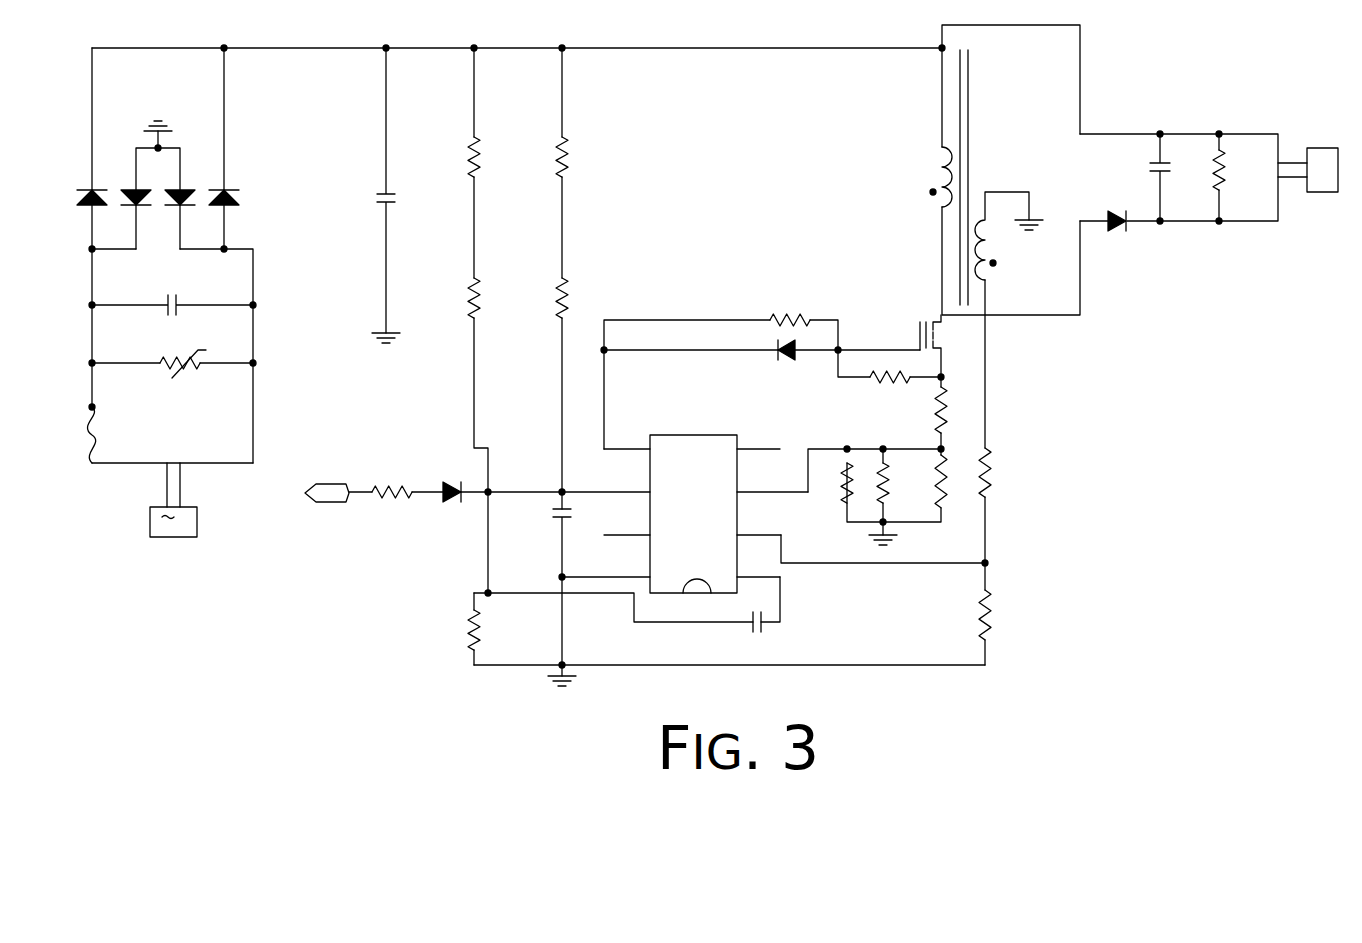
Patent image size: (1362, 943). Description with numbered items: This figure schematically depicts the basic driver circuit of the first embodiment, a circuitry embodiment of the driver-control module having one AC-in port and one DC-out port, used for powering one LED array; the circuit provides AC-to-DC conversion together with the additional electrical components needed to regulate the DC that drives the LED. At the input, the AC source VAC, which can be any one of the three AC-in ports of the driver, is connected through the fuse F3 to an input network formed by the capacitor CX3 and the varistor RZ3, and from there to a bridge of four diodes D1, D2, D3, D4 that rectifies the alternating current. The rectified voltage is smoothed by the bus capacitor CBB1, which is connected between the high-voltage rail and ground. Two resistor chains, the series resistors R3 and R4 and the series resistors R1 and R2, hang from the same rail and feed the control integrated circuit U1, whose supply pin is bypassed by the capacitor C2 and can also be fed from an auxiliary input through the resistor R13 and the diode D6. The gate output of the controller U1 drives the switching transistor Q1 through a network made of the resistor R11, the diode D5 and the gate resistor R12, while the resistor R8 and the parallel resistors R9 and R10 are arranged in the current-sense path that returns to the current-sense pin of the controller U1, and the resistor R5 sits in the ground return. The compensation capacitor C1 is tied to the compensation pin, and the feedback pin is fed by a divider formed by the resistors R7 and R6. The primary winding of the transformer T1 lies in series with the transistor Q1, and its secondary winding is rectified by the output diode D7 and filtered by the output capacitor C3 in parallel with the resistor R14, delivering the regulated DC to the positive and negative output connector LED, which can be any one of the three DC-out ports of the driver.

The rectifier diode D1 is at (95, 227).
The rectifier diode D2 is at (139, 187).
The rectifier diode D3 is at (183, 187).
The rectifier diode D4 is at (227, 148).
The input capacitor CX3 is at (172, 318).
The varistor RZ3 is at (172, 371).
The fuse F3 is at (103, 433).
The AC-in port VAC is at (152, 500).
The bus capacitor CBB1 is at (367, 195).
The resistor R1 is at (548, 112).
The resistor R2 is at (548, 393).
The resistor R3 is at (460, 112).
The resistor R4 is at (464, 435).
The resistor R5 is at (460, 629).
The VCC capacitor C2 is at (540, 587).
The resistor R13 is at (392, 480).
The diode D6 is at (452, 482).
The control IC U1 is at (685, 504).
The resistor R11 is at (846, 406).
The diode D5 is at (773, 346).
The gate resistor R12 is at (904, 372).
The MOSFET switch Q1 is at (943, 351).
The resistor R8 is at (929, 421).
The sense resistor R9 is at (836, 483).
The sense resistor R10 is at (870, 492).
The compensation capacitor C1 is at (757, 613).
The feedback resistor R7 is at (975, 435).
The feedback resistor R6 is at (975, 627).
The transformer T1 is at (1000, 170).
The output diode D7 is at (1109, 217).
The output capacitor C3 is at (1169, 177).
The output resistor R14 is at (1232, 177).
The DC-out port LED is at (1308, 170).